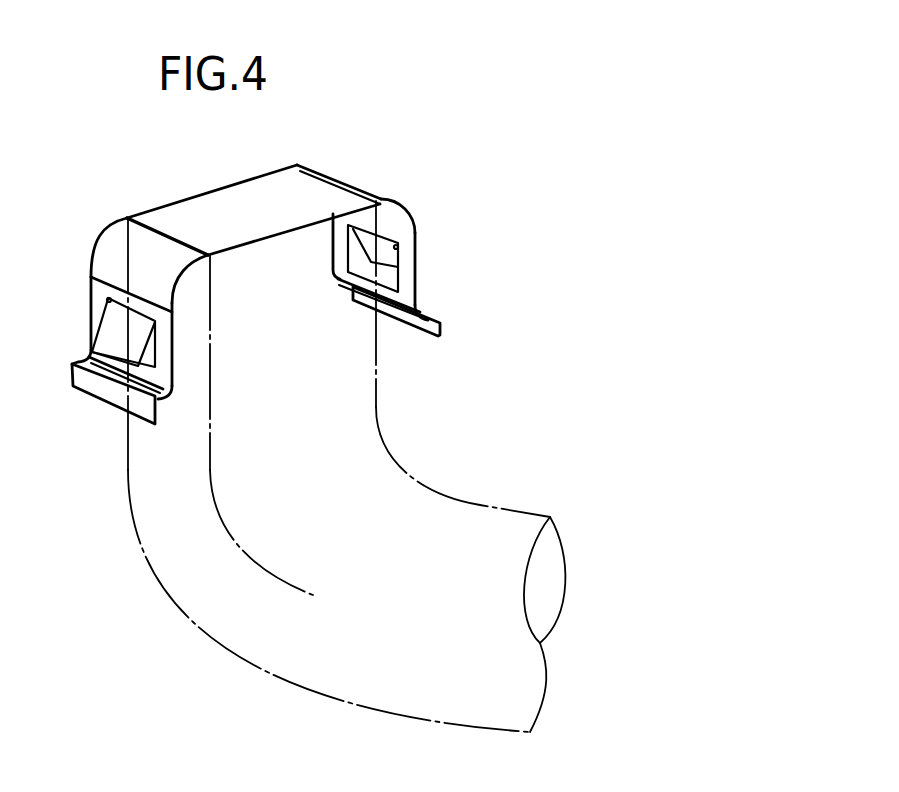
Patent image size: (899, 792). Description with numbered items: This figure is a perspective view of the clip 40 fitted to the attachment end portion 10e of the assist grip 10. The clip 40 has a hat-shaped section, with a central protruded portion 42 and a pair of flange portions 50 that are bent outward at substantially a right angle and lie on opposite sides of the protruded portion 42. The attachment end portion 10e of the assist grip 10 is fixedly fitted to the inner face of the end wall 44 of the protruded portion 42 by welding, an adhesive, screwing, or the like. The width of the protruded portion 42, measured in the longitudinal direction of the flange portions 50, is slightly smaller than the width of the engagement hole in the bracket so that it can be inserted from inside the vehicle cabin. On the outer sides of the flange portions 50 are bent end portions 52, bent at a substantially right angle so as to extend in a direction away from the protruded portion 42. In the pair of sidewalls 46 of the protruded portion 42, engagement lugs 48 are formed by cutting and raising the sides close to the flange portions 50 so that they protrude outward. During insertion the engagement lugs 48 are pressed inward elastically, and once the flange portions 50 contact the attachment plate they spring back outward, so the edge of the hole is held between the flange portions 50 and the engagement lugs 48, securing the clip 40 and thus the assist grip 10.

The assist grip 10 is at (346, 476).
The attachment end portion 10e is at (347, 392).
The clip 40 is at (371, 128).
The protruded portion 42 is at (166, 190).
The end wall 44 is at (251, 195).
The sidewalls 46 is at (97, 307).
The engagement lugs 48 is at (112, 337).
The flange portions 50 is at (75, 386).
The bent end portions 52 is at (112, 397).